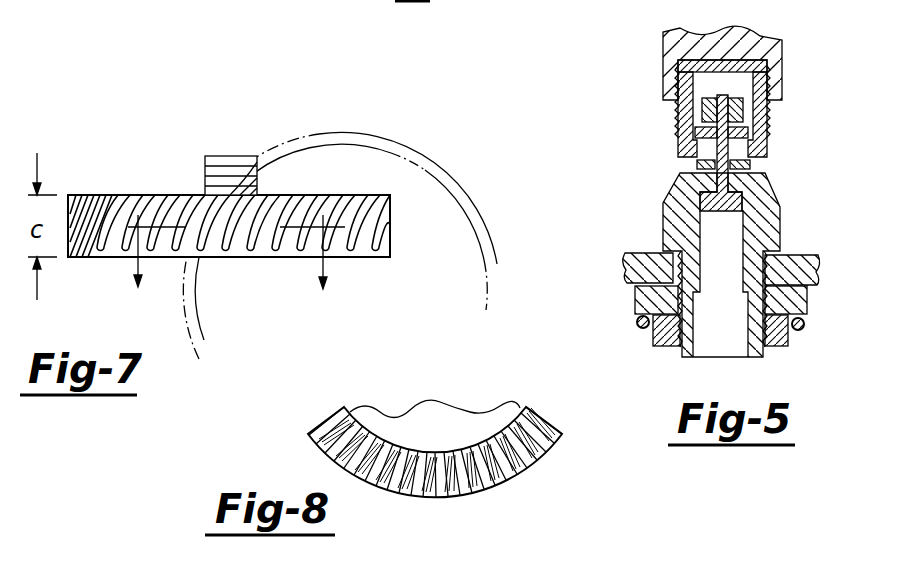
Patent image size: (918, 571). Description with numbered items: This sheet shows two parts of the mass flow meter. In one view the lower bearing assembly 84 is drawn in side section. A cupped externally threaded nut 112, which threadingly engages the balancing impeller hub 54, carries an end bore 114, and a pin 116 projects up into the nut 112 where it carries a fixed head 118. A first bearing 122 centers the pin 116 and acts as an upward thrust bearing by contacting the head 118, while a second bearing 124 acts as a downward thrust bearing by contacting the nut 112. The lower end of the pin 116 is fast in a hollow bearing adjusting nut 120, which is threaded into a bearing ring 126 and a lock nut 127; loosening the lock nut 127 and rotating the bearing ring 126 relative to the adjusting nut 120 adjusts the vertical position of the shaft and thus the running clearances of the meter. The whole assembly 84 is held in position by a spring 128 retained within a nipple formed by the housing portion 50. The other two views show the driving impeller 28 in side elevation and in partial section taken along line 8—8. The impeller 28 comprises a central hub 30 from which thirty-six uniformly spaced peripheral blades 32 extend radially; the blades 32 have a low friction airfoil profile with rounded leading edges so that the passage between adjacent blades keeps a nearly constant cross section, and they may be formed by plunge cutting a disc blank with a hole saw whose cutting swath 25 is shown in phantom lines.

In FIG. 7, the section line 8— 8 is at (232, 275).
In FIG. 7, the cutting swath 25 is at (477, 235).
In FIG. 7, the driving impeller 28 is at (229, 223).
In FIG. 8, the driving impeller 28 is at (446, 420).
In FIG. 8, the central hub 30 is at (458, 418).
In FIG. 7, the peripheral blades 32 is at (207, 258).
In FIG. 8, the peripheral blades 32 is at (490, 478).
In FIG. 5, the housing portion 50 is at (660, 252).
In FIG. 5, the balancing impeller hub 54 is at (785, 50).
In FIG. 5, the lower bearing assembly 84 is at (800, 163).
In FIG. 5, the cupped externally threaded nut 112 is at (680, 122).
In FIG. 5, the end bore 114 is at (753, 74).
In FIG. 5, the pin 116 is at (732, 117).
In FIG. 5, the fixed head 118 is at (702, 108).
In FIG. 5, the bearing adjusting nut 120 is at (783, 232).
In FIG. 5, the first bearing 122 is at (698, 135).
In FIG. 5, the second bearing 124 is at (693, 163).
In FIG. 5, the bearing ring 126 is at (808, 305).
In FIG. 5, the lock nut 127 is at (668, 345).
In FIG. 5, the spring 128 is at (638, 322).